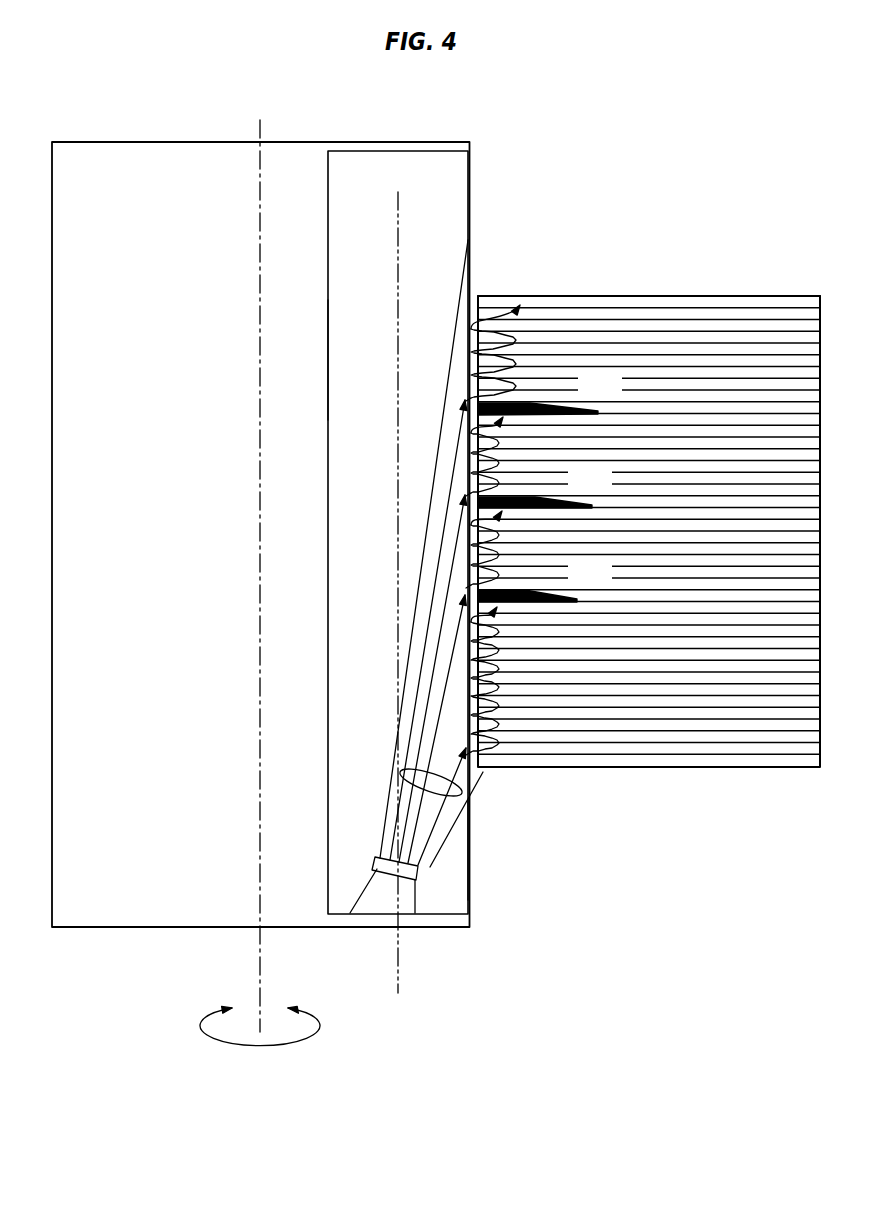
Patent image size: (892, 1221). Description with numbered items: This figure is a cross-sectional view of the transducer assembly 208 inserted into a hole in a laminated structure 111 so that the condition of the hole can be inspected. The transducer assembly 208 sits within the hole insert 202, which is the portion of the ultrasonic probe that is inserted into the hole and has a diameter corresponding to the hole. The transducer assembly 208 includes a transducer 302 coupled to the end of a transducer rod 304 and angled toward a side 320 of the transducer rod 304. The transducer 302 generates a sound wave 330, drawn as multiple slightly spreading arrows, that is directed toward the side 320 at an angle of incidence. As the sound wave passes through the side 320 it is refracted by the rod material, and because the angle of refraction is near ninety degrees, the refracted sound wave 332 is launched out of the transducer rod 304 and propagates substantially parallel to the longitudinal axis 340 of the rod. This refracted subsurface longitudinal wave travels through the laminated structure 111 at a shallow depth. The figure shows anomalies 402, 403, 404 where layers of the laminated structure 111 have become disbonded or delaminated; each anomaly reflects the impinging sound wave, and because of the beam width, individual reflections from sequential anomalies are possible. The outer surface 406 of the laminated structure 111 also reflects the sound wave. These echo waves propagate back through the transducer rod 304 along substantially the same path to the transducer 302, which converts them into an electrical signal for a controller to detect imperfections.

The laminated structure 111 is at (693, 777).
The hole insert 202 is at (100, 929).
The transducer assembly 208 is at (318, 223).
The transducer 302 is at (373, 858).
The transducer rod 304 is at (328, 360).
The side of transducer rod 320 is at (470, 852).
The sound wave 330 is at (442, 785).
The refracted sound wave 332 is at (477, 347).
The longitudinal axis 340 is at (399, 959).
The anomaly 402 is at (592, 581).
The anomaly 403 is at (590, 488).
The anomaly 404 is at (602, 395).
The outer surface 406 is at (581, 296).